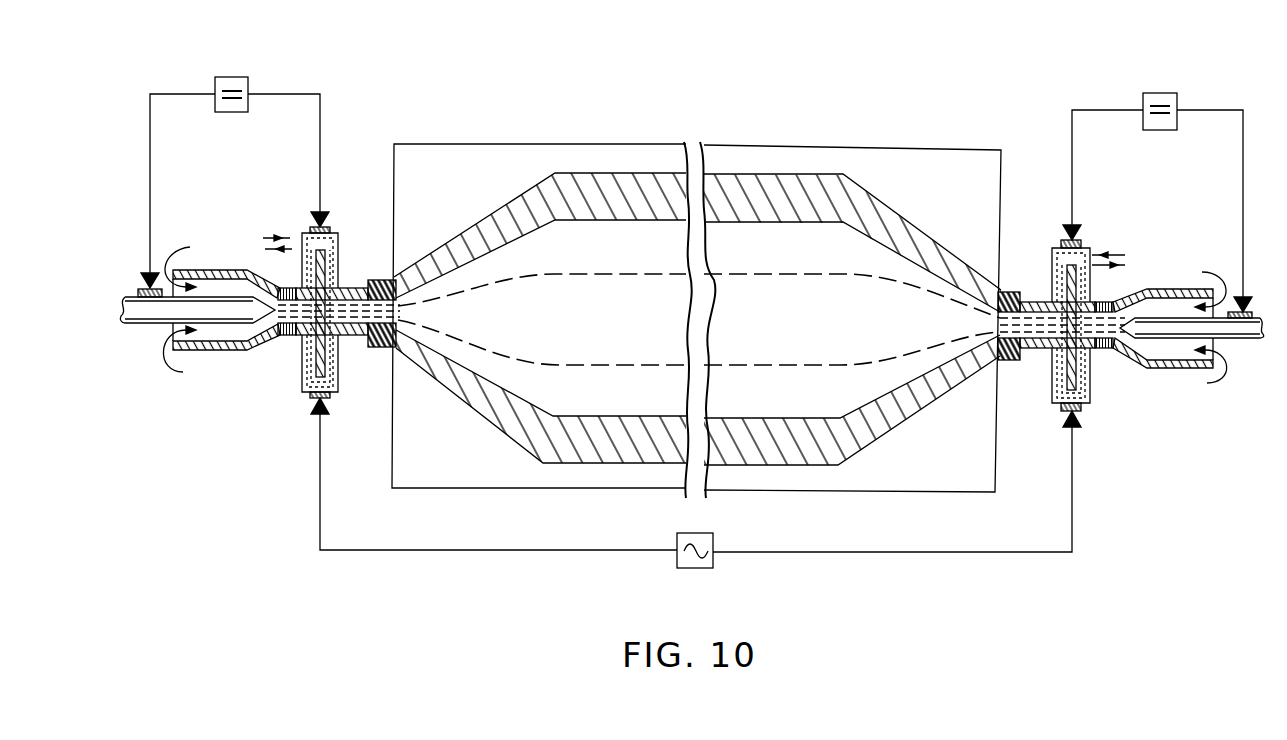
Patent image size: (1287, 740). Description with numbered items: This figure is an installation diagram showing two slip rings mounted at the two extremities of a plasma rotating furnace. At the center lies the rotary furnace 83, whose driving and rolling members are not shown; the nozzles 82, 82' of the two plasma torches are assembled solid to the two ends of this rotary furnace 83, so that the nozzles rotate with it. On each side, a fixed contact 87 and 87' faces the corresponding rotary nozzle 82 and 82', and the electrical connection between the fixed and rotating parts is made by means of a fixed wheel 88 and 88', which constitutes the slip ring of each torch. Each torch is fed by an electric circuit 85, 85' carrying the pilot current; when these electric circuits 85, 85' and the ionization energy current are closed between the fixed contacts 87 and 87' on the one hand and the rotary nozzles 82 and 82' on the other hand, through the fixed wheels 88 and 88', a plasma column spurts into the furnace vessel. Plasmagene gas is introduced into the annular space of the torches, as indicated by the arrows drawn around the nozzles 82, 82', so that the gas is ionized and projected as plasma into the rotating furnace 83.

The nozzle 82 is at (1177, 362).
The nozzle 82' is at (226, 347).
The rotary furnace 83 is at (813, 390).
The electric circuit 85 is at (233, 165).
The electric circuit 85' is at (1157, 182).
The fixed contact 87 is at (183, 338).
The fixed contact 87' is at (1192, 371).
The fixed wheel 88 is at (336, 303).
The fixed wheel 88' is at (1050, 310).